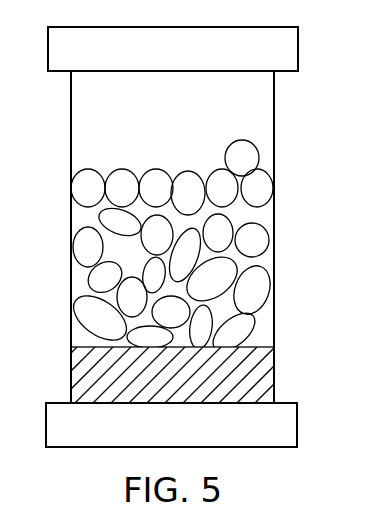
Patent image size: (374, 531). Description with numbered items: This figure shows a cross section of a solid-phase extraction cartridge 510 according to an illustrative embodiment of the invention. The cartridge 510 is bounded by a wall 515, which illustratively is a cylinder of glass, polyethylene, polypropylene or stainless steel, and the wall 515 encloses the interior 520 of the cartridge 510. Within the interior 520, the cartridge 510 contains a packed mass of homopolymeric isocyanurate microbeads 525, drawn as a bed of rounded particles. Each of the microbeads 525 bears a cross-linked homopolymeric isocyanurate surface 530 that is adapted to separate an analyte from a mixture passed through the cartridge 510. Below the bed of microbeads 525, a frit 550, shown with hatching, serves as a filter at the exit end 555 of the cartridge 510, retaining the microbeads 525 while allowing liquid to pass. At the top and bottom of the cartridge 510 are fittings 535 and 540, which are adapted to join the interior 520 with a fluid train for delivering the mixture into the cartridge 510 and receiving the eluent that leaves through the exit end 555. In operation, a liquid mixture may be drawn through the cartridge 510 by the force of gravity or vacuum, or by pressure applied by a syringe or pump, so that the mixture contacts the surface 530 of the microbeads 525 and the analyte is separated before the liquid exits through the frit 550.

The solid-phase extraction cartridge 510 is at (193, 237).
The wall 515 is at (71, 158).
The interior 520 is at (93, 126).
The homopolymeric isocyanurate microbeads 525 is at (274, 244).
The cross-linked homopolymeric isocyanurate surface 530 is at (192, 172).
The fitting 535 is at (290, 52).
The fitting 540 is at (288, 432).
The frit 550 is at (265, 394).
The exit end 555 is at (71, 373).